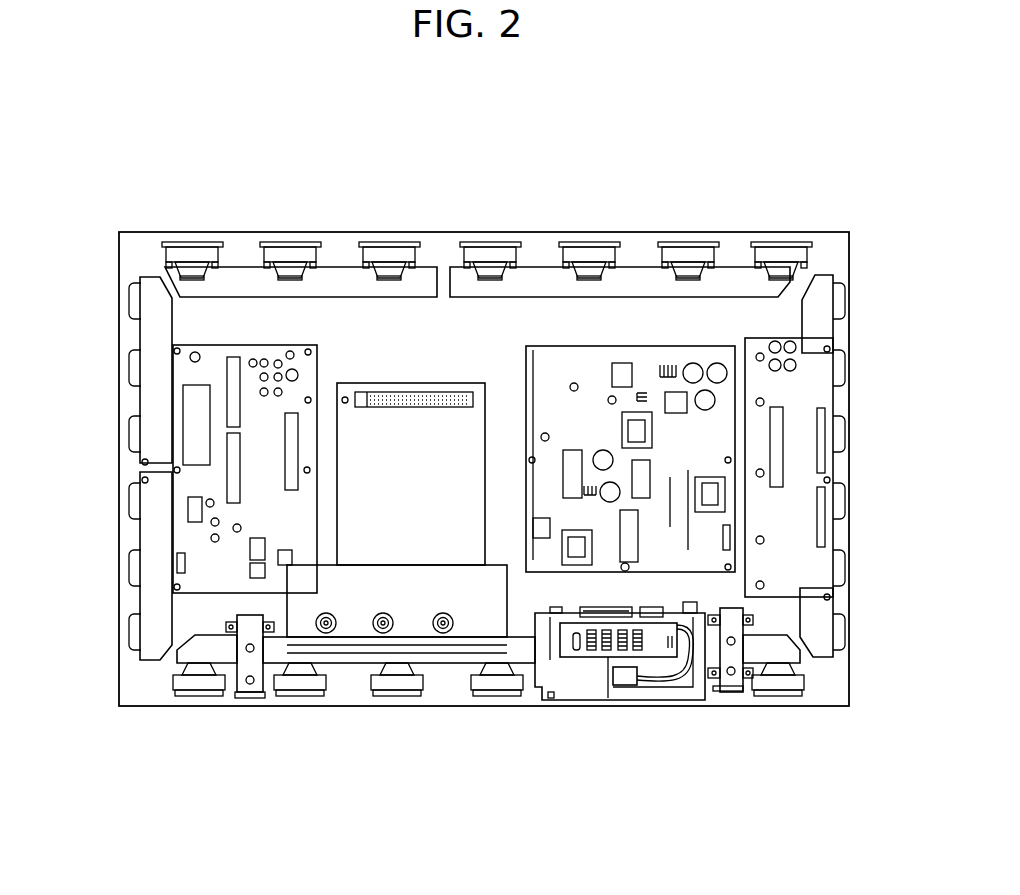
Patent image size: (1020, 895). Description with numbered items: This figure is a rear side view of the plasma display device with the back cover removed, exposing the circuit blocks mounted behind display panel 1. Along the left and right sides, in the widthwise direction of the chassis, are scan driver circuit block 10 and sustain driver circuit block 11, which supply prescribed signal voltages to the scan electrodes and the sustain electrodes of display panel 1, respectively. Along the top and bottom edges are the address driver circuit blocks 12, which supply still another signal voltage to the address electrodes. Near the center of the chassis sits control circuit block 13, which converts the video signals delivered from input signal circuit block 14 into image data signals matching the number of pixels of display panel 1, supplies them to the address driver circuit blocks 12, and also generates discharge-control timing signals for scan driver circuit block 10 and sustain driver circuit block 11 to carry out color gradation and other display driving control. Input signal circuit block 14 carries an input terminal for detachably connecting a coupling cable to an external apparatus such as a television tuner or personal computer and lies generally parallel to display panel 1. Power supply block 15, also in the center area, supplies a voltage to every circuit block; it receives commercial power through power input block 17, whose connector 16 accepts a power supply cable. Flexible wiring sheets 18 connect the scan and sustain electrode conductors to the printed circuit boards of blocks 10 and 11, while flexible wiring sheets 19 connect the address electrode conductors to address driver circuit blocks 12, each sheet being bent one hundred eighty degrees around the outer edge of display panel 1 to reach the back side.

The display panel 1 is at (738, 232).
The scan driver circuit block 10 is at (155, 450).
The sustain driver circuit block 11 is at (818, 282).
The address driver circuit blocks 12 is at (242, 280).
The control circuit block 13 is at (378, 440).
The input signal circuit block 14 is at (357, 643).
The power supply block 15 is at (620, 372).
The connector 16 is at (628, 677).
The power input block 17 is at (580, 657).
The flexible wiring sheets 18 is at (126, 312).
The flexible wiring sheets 19 is at (415, 248).